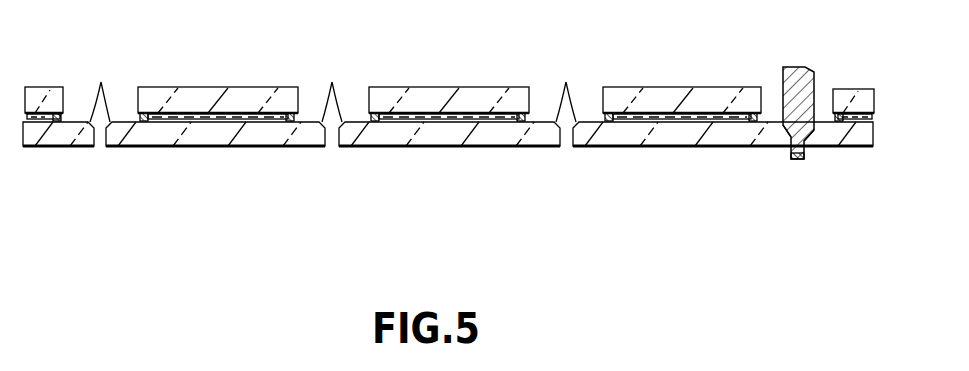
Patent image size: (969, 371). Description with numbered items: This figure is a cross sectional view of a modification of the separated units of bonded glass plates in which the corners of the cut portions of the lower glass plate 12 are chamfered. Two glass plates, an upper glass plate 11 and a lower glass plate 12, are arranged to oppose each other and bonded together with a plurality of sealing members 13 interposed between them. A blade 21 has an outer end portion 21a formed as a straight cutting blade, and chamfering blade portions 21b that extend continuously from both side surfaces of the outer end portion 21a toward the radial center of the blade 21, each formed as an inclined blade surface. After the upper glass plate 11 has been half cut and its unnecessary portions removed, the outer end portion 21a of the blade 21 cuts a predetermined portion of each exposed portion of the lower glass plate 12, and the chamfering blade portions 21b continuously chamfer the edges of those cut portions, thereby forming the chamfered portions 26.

The upper glass plate 11 is at (51, 80).
The lower glass plate 12 is at (37, 152).
The sealing members 13 is at (64, 122).
The blade 21 is at (822, 64).
The outer end portion 21a is at (795, 161).
The chamfering blade portions 21b is at (788, 134).
The chamfered portions 26 is at (337, 88).